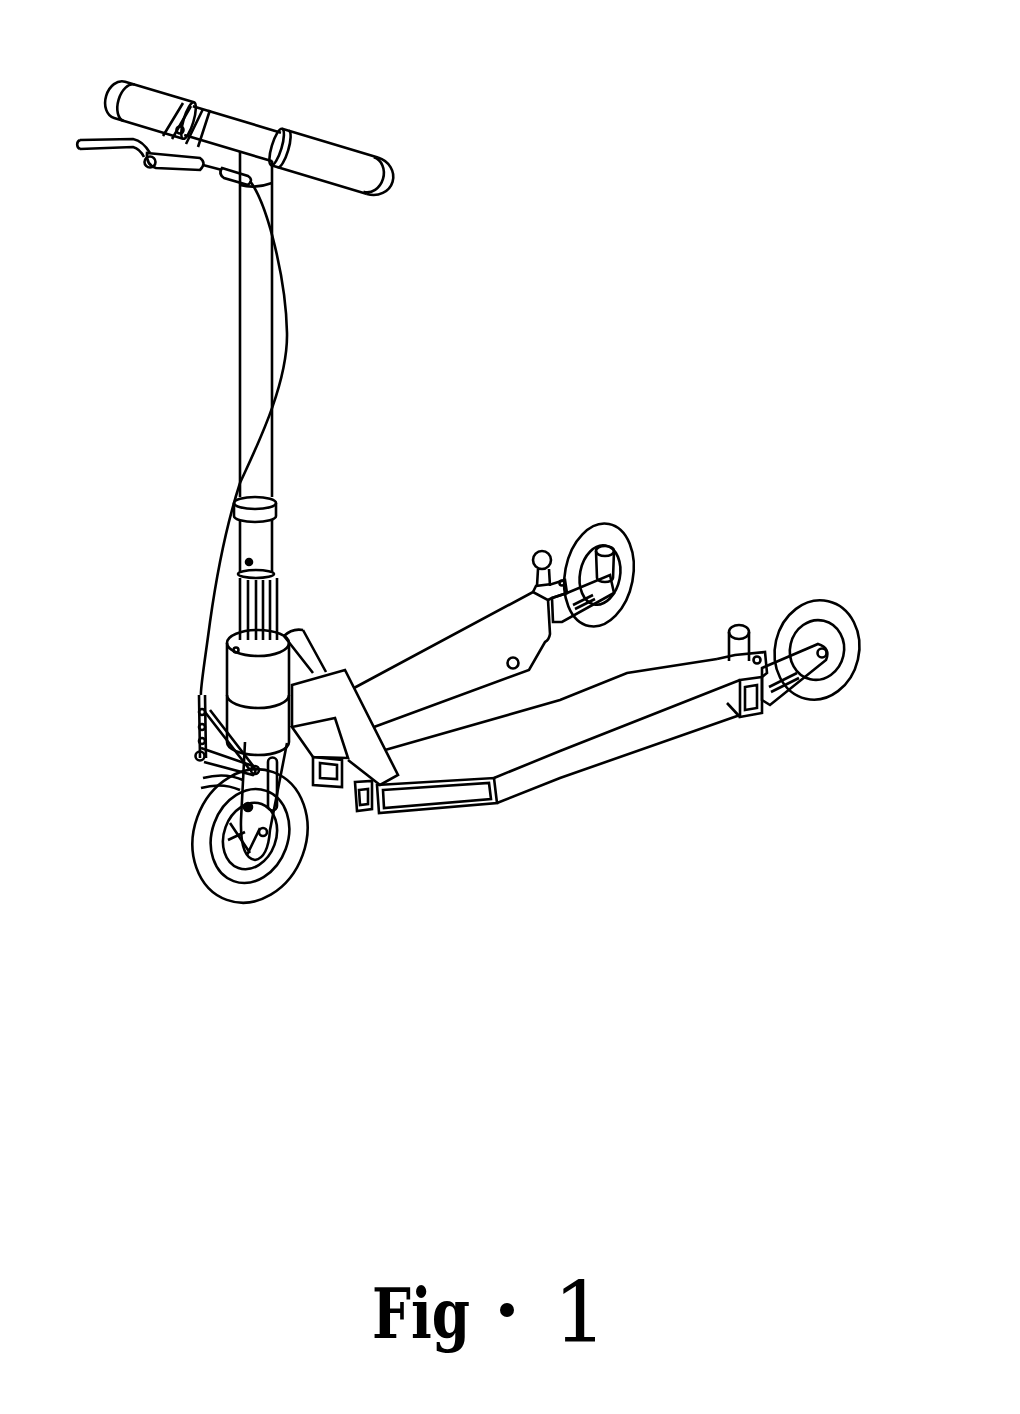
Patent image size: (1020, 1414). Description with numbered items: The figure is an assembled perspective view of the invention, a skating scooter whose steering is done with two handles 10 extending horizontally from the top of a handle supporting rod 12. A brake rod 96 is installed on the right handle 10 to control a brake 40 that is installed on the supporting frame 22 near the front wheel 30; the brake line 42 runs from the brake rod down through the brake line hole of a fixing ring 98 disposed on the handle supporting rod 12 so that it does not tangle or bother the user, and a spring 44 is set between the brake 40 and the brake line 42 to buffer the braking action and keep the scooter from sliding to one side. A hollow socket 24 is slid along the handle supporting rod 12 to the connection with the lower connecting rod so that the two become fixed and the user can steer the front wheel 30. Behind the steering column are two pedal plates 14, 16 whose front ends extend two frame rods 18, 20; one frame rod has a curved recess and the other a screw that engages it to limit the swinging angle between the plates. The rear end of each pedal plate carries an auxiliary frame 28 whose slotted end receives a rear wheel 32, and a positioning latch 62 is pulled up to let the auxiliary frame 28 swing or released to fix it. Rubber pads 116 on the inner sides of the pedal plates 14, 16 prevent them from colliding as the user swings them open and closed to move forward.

The handles 10 is at (165, 108).
The handle supporting rod 12 is at (246, 320).
The pedal plate 14 is at (565, 737).
The pedal plate 16 is at (460, 650).
The frame rod 18 is at (390, 812).
The frame rod 20 is at (305, 652).
The supporting frame 22 is at (285, 777).
The hollow socket 24 is at (270, 601).
The auxiliary frame 28 is at (768, 694).
The front wheel 30 is at (238, 878).
The rear wheel 32 is at (843, 671).
The brake 40 is at (205, 768).
The brake line 42 is at (210, 622).
The spring 44 is at (200, 733).
The positioning latch 62 is at (542, 551).
The brake rod 96 is at (163, 168).
The fixing ring 98 is at (278, 508).
The rubber pads 116 is at (512, 657).